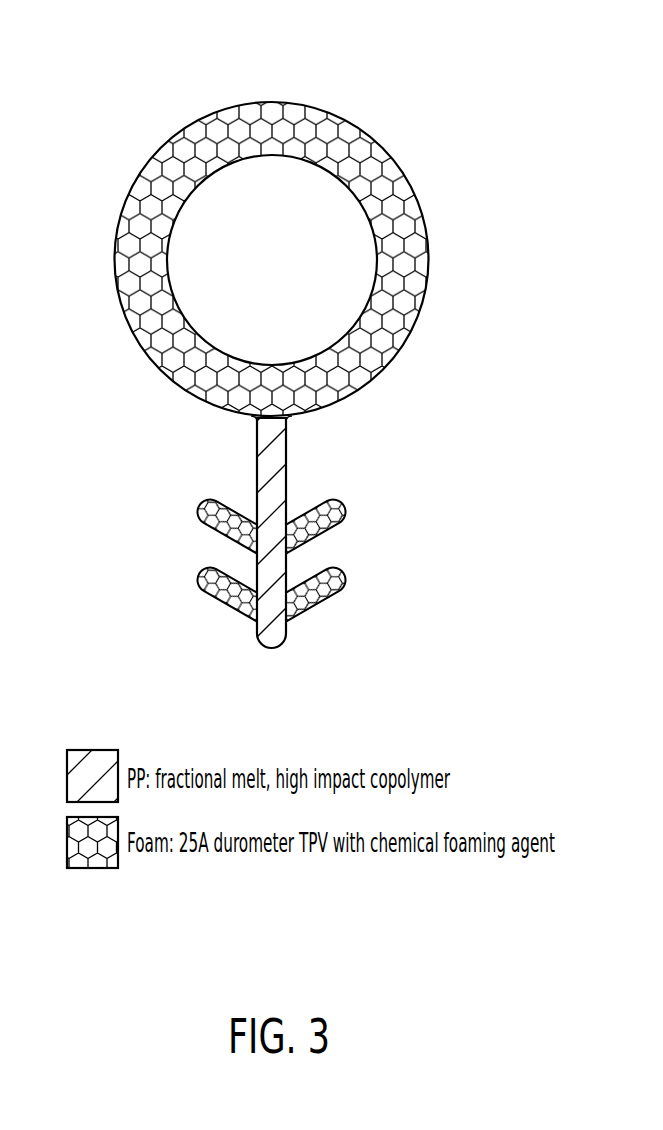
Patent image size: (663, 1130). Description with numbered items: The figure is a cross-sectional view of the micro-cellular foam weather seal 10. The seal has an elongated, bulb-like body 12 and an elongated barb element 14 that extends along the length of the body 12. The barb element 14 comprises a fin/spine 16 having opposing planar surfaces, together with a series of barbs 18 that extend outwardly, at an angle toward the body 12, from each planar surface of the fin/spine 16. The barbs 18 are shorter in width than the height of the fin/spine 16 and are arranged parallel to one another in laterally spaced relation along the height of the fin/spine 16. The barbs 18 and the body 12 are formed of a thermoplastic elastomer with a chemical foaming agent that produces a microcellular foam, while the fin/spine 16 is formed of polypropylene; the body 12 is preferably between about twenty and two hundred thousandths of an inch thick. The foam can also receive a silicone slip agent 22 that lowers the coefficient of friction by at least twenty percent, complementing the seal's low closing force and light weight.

The micro-cellular foam weather seal 10 is at (251, 364).
The bulb-like body 12 is at (291, 259).
The barb element 14 is at (295, 550).
The fin/spine 16 is at (273, 462).
The barbs 18 is at (335, 510).
The silicone slip agent 22 is at (402, 325).